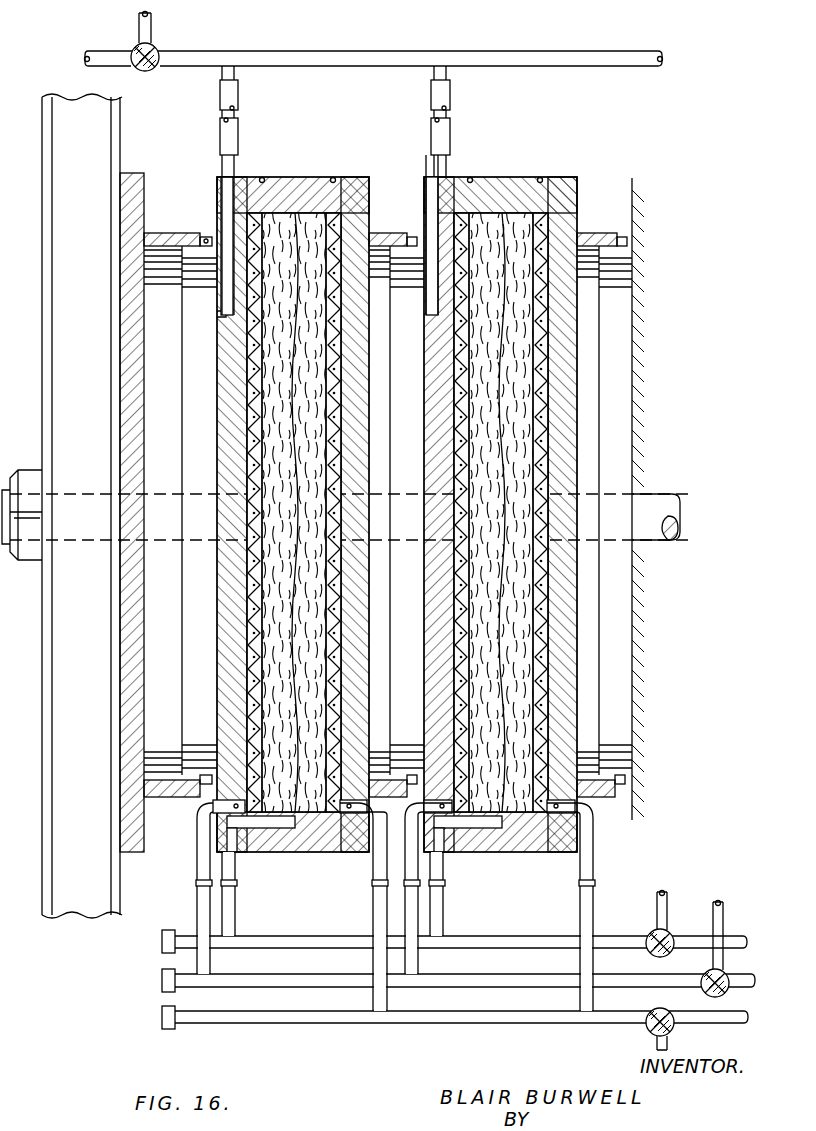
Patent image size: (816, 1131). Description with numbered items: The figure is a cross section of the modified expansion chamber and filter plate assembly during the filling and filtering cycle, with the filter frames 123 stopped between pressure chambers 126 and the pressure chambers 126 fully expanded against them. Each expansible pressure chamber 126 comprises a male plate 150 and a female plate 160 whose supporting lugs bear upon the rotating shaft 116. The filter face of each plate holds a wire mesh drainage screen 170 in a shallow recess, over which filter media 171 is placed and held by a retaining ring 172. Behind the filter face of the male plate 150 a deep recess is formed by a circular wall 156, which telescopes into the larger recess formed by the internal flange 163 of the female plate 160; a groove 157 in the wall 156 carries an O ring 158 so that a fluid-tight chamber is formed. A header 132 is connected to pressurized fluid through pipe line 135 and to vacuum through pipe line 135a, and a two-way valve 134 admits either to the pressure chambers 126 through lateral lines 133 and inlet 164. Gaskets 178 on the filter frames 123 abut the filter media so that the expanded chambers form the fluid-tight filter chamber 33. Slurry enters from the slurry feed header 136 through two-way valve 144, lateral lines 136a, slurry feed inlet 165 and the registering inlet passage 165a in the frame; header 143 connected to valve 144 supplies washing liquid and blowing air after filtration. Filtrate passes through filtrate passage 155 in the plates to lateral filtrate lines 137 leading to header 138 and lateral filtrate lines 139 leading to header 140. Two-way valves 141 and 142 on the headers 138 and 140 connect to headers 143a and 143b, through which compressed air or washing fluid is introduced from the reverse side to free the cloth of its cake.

The filter chamber 33 is at (302, 340).
The rotating shaft 116 is at (662, 496).
The filter frame 123 is at (283, 485).
The pressure chamber 126 is at (132, 386).
The header 132 is at (338, 52).
The lateral line 133 is at (238, 104).
The two-way valve 134 is at (158, 50).
The pipe line 135 is at (102, 59).
The pipe line 135a is at (138, 20).
The slurry feed header 136 is at (547, 940).
The lateral line 136a is at (236, 908).
The lateral filtrate line 137 is at (197, 878).
The header 138 is at (480, 990).
The lateral filtrate line 139 is at (374, 916).
The header 140 is at (532, 1026).
The two-way valve 141 is at (726, 992).
The two-way valve 142 is at (672, 1012).
The header 143 is at (668, 892).
The header 143a is at (736, 892).
The header 143b is at (668, 1046).
The two-way valve 144 is at (672, 936).
The male plate 150 is at (218, 206).
The filtrate passage 155 is at (222, 812).
The circular wall 156 is at (622, 250).
The groove 157 is at (402, 262).
The O ring 158 is at (396, 242).
The female plate 160 is at (352, 180).
The internal flange 163 is at (590, 240).
The inlet 164 is at (217, 314).
The slurry feed inlet 165 is at (238, 856).
The inlet passage 165a is at (286, 842).
The wire mesh drainage screen 170 is at (456, 380).
The filter media 171 is at (449, 180).
The retaining ring 172 is at (333, 177).
The gasket 178 is at (240, 178).